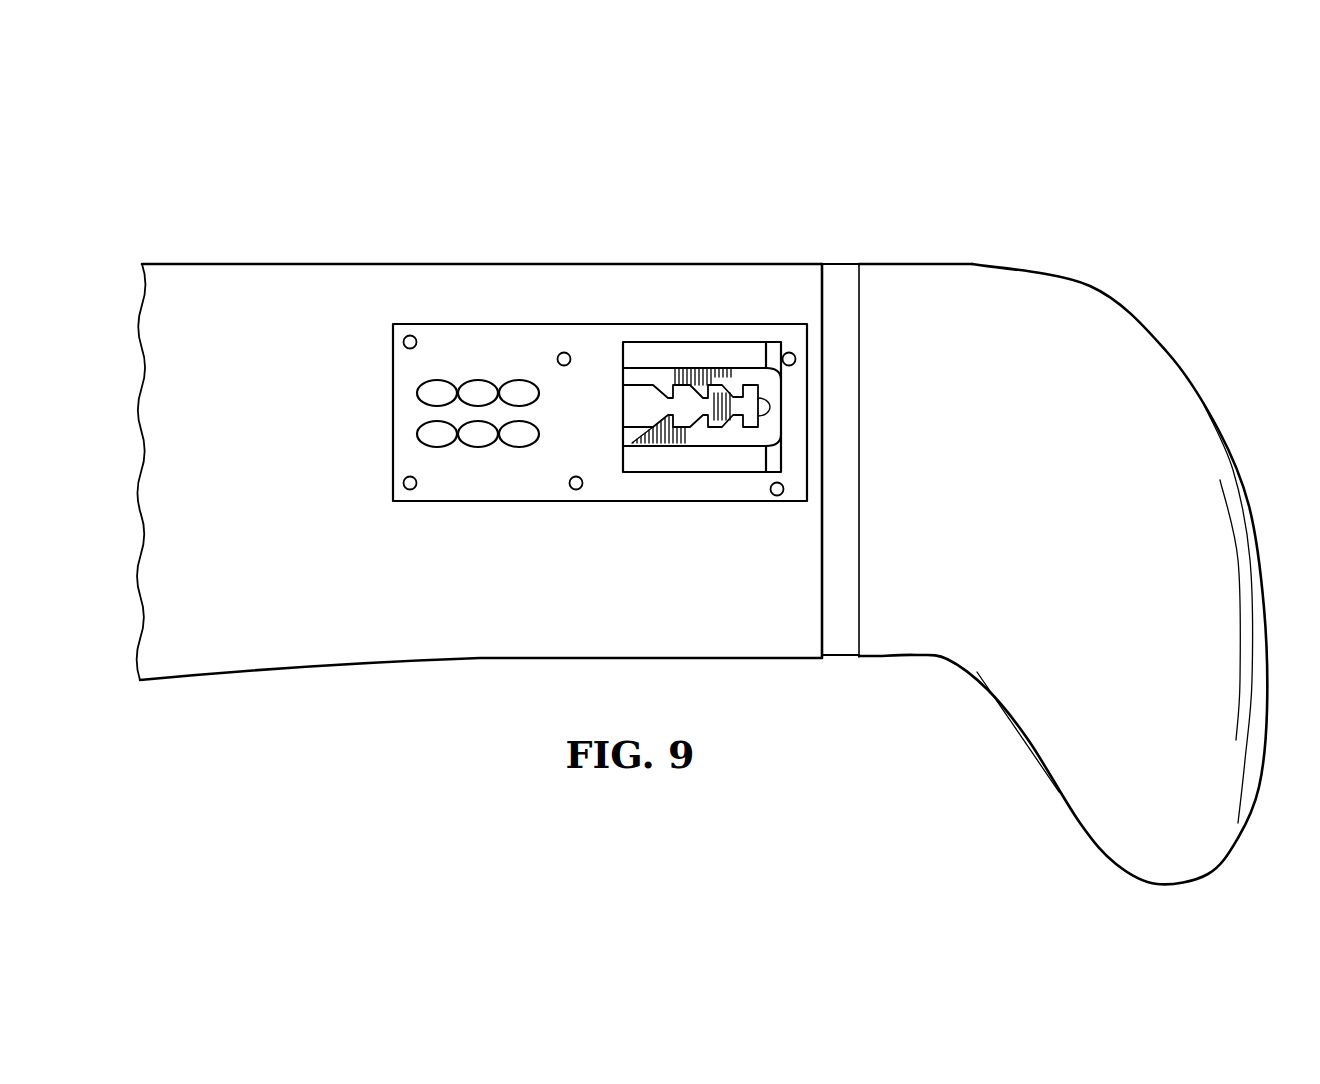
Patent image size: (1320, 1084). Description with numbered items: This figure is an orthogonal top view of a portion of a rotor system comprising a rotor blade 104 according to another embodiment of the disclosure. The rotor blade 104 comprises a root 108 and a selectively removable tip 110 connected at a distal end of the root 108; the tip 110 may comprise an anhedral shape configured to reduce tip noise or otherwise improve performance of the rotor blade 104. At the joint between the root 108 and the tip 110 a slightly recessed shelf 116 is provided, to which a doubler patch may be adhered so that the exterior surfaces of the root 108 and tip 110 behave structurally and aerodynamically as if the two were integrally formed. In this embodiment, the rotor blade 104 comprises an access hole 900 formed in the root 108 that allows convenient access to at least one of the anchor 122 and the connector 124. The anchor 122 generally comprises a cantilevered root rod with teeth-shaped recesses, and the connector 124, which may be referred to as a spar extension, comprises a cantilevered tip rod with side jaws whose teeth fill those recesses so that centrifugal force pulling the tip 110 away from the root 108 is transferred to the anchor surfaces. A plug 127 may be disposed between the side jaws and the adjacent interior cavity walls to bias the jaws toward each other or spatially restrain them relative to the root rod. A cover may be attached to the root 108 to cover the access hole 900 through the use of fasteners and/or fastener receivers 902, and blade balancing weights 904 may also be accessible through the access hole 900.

The rotor blade 104 is at (880, 172).
The root 108 is at (625, 264).
The tip 110 is at (975, 268).
The shelf 116 is at (838, 264).
The anchor 122 is at (633, 405).
The connector 124 is at (702, 435).
The plug 127 is at (700, 355).
The access hole 900 is at (535, 506).
The fastener receivers 902 is at (410, 336).
The blade balancing weights 904 is at (519, 380).